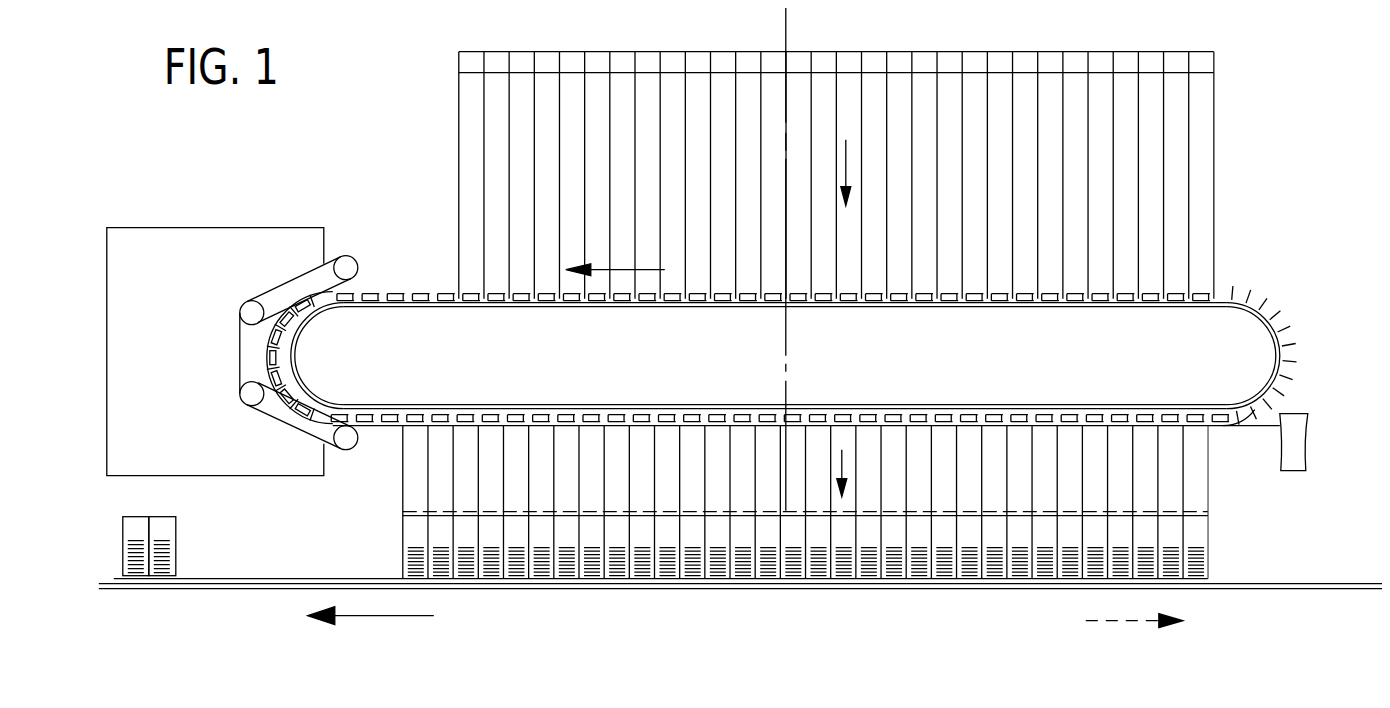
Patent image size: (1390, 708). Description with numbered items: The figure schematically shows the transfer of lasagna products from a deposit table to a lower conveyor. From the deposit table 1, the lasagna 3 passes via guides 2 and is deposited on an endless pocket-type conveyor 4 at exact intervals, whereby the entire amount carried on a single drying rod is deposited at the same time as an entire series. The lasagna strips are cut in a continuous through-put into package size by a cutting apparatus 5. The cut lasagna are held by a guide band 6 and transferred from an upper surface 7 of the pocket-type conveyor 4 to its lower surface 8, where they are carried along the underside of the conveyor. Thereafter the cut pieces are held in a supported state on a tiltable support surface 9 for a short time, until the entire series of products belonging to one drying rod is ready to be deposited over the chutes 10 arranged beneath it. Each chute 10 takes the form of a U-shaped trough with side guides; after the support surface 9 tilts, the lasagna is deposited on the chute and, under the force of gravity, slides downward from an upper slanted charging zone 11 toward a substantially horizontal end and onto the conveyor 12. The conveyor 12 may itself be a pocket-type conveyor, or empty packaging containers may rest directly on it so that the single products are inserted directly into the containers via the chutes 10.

The deposit table 1 is at (1207, 70).
The guides 2 is at (1213, 183).
The lasagna 3 is at (1200, 296).
The endless pocket-type conveyor 4 is at (1283, 316).
The cutting apparatus 5 is at (232, 257).
The guide band 6 is at (241, 386).
The upper surface 7 is at (625, 298).
The lower surface 8 is at (493, 404).
The tiltable support surface 9 is at (1300, 428).
The chutes 10 is at (1200, 478).
The upper slanted charging zone 11 is at (995, 583).
The conveyor 12 is at (1345, 588).